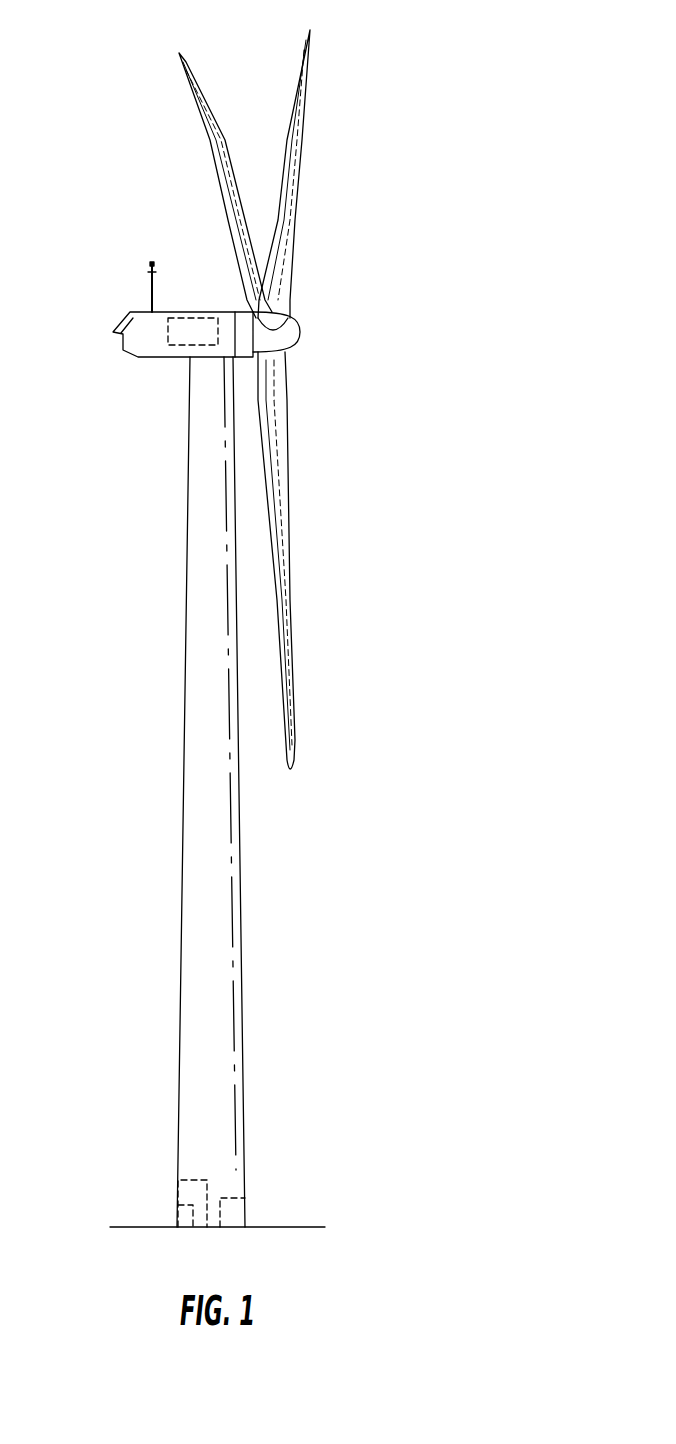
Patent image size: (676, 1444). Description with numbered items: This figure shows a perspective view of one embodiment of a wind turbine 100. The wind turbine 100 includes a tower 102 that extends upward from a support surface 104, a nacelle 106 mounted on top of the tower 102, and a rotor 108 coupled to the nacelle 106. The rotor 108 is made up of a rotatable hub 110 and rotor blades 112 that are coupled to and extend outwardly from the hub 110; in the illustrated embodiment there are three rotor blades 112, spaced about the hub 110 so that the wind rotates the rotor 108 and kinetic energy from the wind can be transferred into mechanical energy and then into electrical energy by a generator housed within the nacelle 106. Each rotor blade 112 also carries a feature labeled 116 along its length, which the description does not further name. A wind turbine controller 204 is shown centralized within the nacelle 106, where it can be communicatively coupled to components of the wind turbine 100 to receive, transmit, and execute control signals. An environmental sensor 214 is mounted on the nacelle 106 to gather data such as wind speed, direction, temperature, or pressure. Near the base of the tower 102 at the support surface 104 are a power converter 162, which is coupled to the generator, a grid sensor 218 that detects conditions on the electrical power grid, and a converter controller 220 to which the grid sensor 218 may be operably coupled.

The wind turbine 100 is at (447, 131).
The tower 102 is at (222, 863).
The support surface 104 is at (150, 1227).
The nacelle 106 is at (160, 362).
The rotor 108 is at (342, 288).
The rotatable hub 110 is at (302, 327).
The rotor blade 112 is at (290, 150).
The blade sensors 116 is at (218, 200).
The power converter 162 is at (198, 1183).
The wind turbine controller 204 is at (195, 317).
The environmental sensor 214 is at (150, 302).
The grid sensor 218 is at (235, 1215).
The converter controller 220 is at (183, 1230).